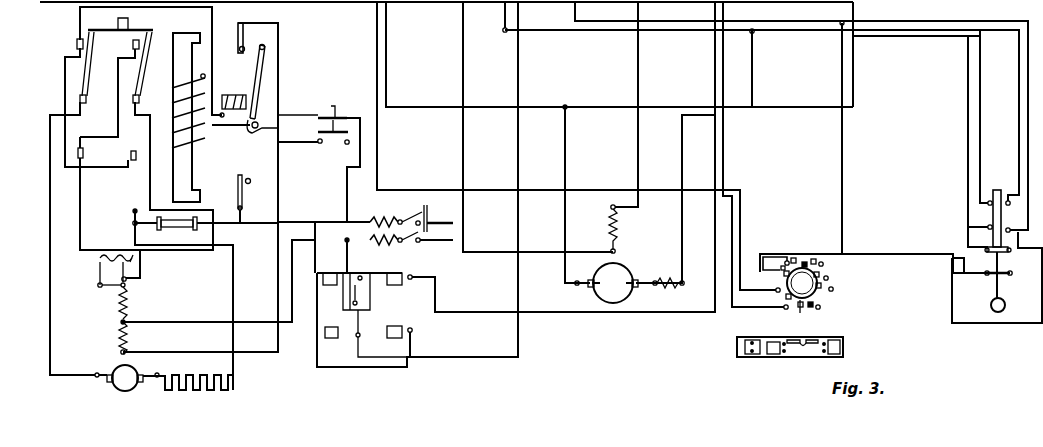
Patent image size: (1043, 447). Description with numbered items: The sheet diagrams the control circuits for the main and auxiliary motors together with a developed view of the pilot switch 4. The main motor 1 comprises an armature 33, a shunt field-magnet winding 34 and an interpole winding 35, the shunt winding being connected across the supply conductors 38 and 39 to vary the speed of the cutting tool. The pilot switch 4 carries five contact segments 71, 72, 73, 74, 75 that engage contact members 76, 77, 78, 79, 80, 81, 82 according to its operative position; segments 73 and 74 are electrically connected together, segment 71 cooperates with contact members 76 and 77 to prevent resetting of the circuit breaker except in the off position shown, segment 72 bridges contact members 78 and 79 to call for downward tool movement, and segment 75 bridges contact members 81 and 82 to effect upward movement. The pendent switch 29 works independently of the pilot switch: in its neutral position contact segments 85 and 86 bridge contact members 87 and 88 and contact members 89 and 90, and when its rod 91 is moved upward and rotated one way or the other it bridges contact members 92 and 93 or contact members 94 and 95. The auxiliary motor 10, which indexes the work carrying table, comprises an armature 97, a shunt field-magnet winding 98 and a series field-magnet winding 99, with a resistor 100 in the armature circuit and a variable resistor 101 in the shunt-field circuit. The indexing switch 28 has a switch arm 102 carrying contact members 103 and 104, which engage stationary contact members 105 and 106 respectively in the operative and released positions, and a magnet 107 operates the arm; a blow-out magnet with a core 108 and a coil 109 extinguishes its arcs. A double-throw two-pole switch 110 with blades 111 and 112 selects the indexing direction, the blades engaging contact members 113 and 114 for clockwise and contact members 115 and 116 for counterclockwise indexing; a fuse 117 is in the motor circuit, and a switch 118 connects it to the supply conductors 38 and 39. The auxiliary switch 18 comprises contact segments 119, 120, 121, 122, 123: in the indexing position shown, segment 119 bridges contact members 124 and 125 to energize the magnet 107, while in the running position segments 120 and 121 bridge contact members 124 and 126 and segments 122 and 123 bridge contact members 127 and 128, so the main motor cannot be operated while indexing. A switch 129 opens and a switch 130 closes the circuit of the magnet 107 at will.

In FIG. 2, the double throw two pole switch 110 is at (33, 68).
In FIG. 2, the contact member 113 is at (77, 45).
In FIG. 2, the contact member 114 is at (128, 30).
In FIG. 2, the switch blade 111 is at (86, 64).
In FIG. 2, the switch blade 112 is at (141, 46).
In FIG. 2, the contact member 115 is at (80, 160).
In FIG. 2, the contact member 116 is at (137, 152).
In FIG. 2, the core 108 is at (192, 28).
In FIG. 2, the coil 109 is at (173, 102).
In FIG. 2, the fuse 117 is at (173, 228).
In FIG. 2, the variable resistor 101 is at (100, 262).
In FIG. 2, the shunt field-magnet winding 98 is at (125, 302).
In FIG. 2, the series field-magnet winding 99 is at (128, 334).
In FIG. 2, the armature 97 is at (112, 366).
In FIG. 2, the auxiliary motor 10 is at (42, 395).
In FIG. 2, the resistor 100 is at (217, 379).
In FIG. 2, the indexing switch 28 is at (315, 63).
In FIG. 2, the contact member 103 is at (256, 44).
In FIG. 2, the stationary contact member 105 is at (248, 57).
In FIG. 2, the magnet 107 is at (240, 94).
In FIG. 2, the switch arm 102 is at (262, 80).
In FIG. 2, the stationary contact member 106 is at (247, 179).
In FIG. 2, the contact member 104 is at (242, 188).
In FIG. 2, the switch 129 is at (333, 104).
In FIG. 2, the switch 130 is at (320, 145).
In FIG. 2, the switch 118 is at (406, 221).
In FIG. 2, the supply conductor 38 is at (440, 222).
In FIG. 2, the supply conductor 39 is at (425, 243).
In FIG. 2, the auxiliary switch 18 is at (456, 384).
In FIG. 2, the contact segment 121 is at (330, 273).
In FIG. 2, the contact member 124 is at (360, 274).
In FIG. 2, the contact segment 120 is at (394, 273).
In FIG. 2, the contact member 126 is at (418, 277).
In FIG. 2, the contact segment 119 is at (362, 293).
In FIG. 2, the contact member 125 is at (358, 304).
In FIG. 2, the contact segment 122 is at (336, 323).
In FIG. 2, the contact member 127 is at (358, 334).
In FIG. 2, the contact segment 123 is at (394, 339).
In FIG. 2, the contact member 128 is at (413, 330).
In FIG. 2, the shunt field-magnet winding 34 is at (618, 215).
In FIG. 2, the main motor 1 is at (649, 248).
In FIG. 2, the interpole winding 35 is at (668, 279).
In FIG. 2, the armature 33 is at (622, 290).
In FIG. 2, the pilot switch 4 is at (898, 325).
In FIG. 2, the contact segment 71 is at (802, 283).
In FIG. 3, the contact segment 71 is at (740, 347).
In FIG. 2, the contact member 80 is at (804, 262).
In FIG. 2, the contact member 79 is at (762, 268).
In FIG. 2, the contact segment 73 is at (792, 259).
In FIG. 3, the contact segment 73 is at (788, 340).
In FIG. 2, the contact segment 74 is at (814, 260).
In FIG. 3, the contact segment 74 is at (818, 336).
In FIG. 2, the contact member 78 is at (784, 277).
In FIG. 2, the contact member 81 is at (828, 278).
In FIG. 2, the contact member 82 is at (832, 289).
In FIG. 2, the contact segment 72 is at (786, 296).
In FIG. 3, the contact segment 72 is at (771, 355).
In FIG. 2, the contact segment 75 is at (818, 302).
In FIG. 3, the contact segment 75 is at (842, 346).
In FIG. 2, the contact member 76 is at (820, 307).
In FIG. 2, the contact member 77 is at (808, 310).
In FIG. 3, the contact member 77 is at (800, 341).
In FIG. 2, the pendent switch 29 is at (923, 181).
In FIG. 2, the rod 91 is at (997, 190).
In FIG. 2, the contact member 92 is at (1010, 198).
In FIG. 2, the contact member 93 is at (1004, 206).
In FIG. 2, the contact member 94 is at (986, 204).
In FIG. 2, the contact member 95 is at (986, 228).
In FIG. 2, the contact member 90 is at (1012, 231).
In FIG. 2, the contact member 89 is at (990, 251).
In FIG. 2, the contact member 87 is at (986, 274).
In FIG. 2, the contact segment 86 is at (1011, 274).
In FIG. 2, the contact member 88 is at (1006, 276).
In FIG. 2, the contact segment 85 is at (1012, 322).